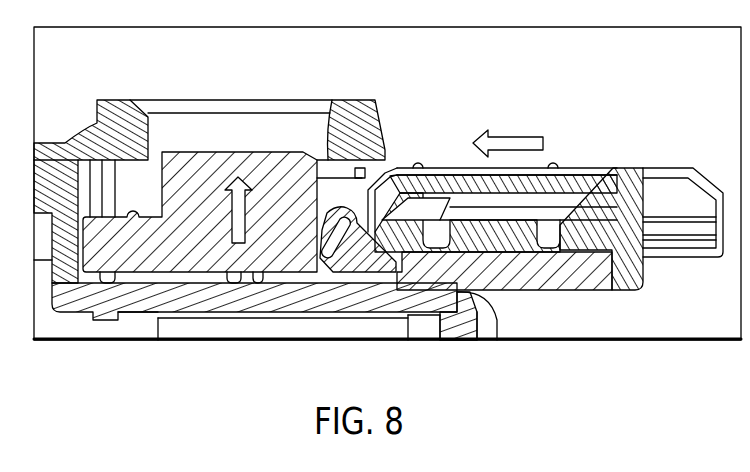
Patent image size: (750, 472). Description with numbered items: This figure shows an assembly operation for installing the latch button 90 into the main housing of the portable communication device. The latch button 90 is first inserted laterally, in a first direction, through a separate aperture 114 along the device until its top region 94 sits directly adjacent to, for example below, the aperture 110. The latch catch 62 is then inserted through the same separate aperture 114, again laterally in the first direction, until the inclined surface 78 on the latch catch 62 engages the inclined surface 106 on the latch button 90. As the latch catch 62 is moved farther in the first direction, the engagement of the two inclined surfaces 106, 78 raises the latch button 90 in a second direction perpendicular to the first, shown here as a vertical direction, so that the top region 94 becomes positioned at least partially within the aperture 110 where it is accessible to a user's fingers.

The latch catch 62 is at (605, 231).
The inclined surface 78 is at (357, 177).
The latch button 90 is at (188, 218).
The top region 94 is at (225, 152).
The inclined surface 106 is at (330, 175).
The aperture 110 is at (270, 132).
The separate aperture 114 is at (362, 185).